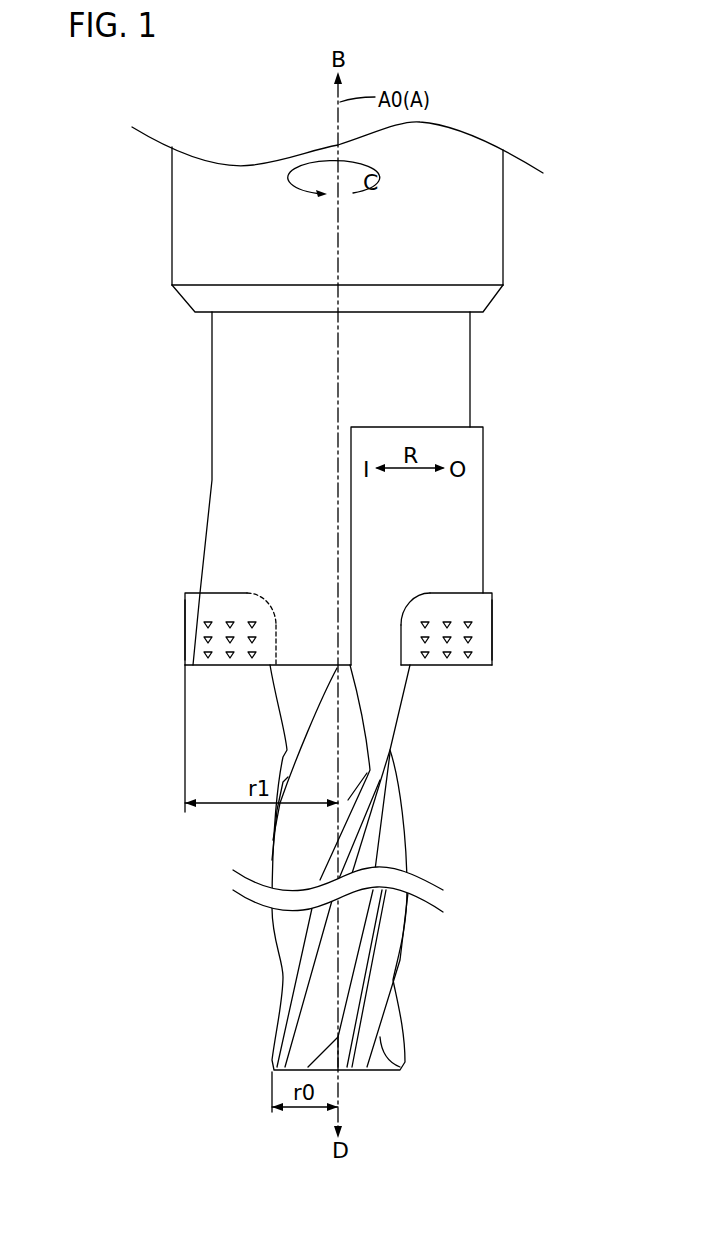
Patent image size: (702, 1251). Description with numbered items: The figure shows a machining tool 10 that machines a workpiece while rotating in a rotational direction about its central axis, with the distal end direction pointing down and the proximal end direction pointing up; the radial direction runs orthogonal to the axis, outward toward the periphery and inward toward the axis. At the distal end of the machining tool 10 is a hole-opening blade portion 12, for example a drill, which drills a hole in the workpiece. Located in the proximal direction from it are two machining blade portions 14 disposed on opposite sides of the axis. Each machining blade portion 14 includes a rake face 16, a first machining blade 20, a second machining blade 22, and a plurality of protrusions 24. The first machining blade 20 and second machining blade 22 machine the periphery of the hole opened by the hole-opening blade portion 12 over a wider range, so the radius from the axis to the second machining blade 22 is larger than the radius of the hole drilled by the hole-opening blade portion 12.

The machining tool 10 is at (75, 108).
The hole-opening blade portion 12 is at (402, 955).
The machining blade portion 14 is at (181, 609).
The rake face 16 is at (243, 607).
The first machining blade 20 is at (220, 667).
The second machining blade 22 is at (185, 642).
The protrusions 24 is at (255, 625).